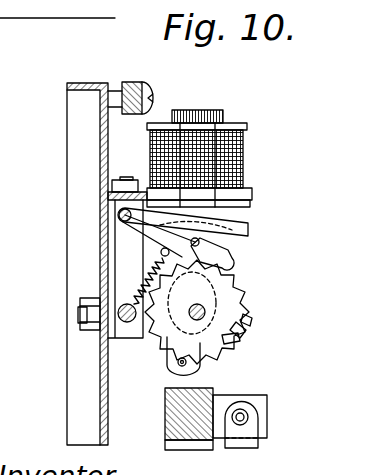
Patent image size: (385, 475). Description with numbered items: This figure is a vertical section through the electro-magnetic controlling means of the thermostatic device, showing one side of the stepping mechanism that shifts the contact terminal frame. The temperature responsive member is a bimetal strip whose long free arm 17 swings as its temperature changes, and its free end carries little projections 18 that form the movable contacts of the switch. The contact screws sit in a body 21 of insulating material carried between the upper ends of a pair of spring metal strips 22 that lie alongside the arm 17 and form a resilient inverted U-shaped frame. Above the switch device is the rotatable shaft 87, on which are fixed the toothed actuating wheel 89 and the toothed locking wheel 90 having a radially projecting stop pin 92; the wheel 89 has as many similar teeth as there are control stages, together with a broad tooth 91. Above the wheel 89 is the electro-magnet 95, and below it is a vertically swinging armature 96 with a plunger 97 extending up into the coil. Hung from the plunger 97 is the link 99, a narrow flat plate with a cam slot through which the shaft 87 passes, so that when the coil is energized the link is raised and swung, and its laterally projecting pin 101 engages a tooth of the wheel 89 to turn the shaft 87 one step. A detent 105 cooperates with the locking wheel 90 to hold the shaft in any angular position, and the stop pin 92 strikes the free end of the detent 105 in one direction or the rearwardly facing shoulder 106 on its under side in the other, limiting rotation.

The free arm 17 is at (260, 441).
The projections 18 is at (250, 404).
The body of insulating material 21 is at (260, 413).
The spring metal strips 22 is at (165, 443).
The rotatable shaft 87 is at (191, 302).
The toothed actuating wheel 89 is at (236, 283).
The toothed locking wheel 90 is at (238, 338).
The broad tooth 91 is at (250, 312).
The stop pin 92 is at (252, 320).
The electro-magnet 95 is at (246, 160).
The armature 96 is at (249, 228).
The plunger 97 is at (232, 207).
The link 99 is at (188, 362).
The pin 101 is at (178, 365).
The detent 105 is at (232, 262).
The shoulder 106 is at (145, 262).